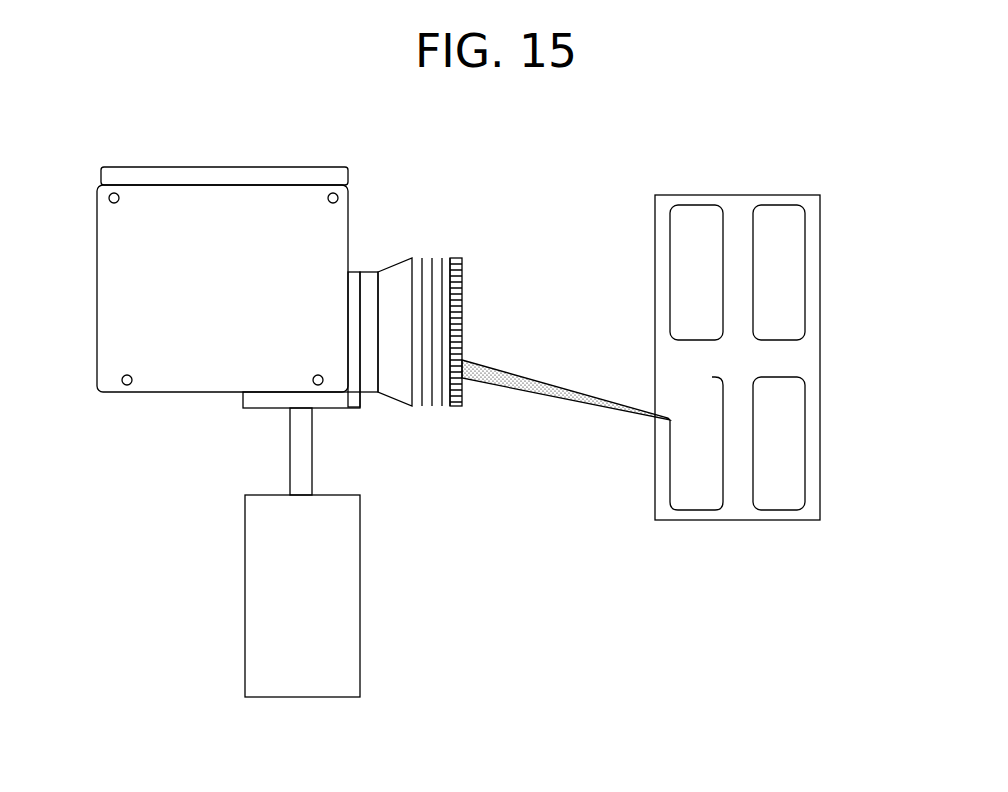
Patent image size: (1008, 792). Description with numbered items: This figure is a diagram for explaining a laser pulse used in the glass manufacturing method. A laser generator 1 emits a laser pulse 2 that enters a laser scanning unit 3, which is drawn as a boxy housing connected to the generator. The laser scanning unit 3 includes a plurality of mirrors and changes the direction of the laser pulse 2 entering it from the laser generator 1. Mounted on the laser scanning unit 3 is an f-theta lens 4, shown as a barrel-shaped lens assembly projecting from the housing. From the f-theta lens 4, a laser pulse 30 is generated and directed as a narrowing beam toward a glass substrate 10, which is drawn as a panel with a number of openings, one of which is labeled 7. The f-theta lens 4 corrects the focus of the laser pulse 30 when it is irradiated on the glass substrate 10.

The laser generator 1 is at (236, 594).
The laser pulse 2 is at (281, 461).
The laser scanning unit 3 is at (88, 285).
The f-theta lens 4 is at (388, 254).
The slot 7 is at (764, 460).
The glass substrate 10 is at (744, 258).
The laser pulse 30 is at (533, 367).